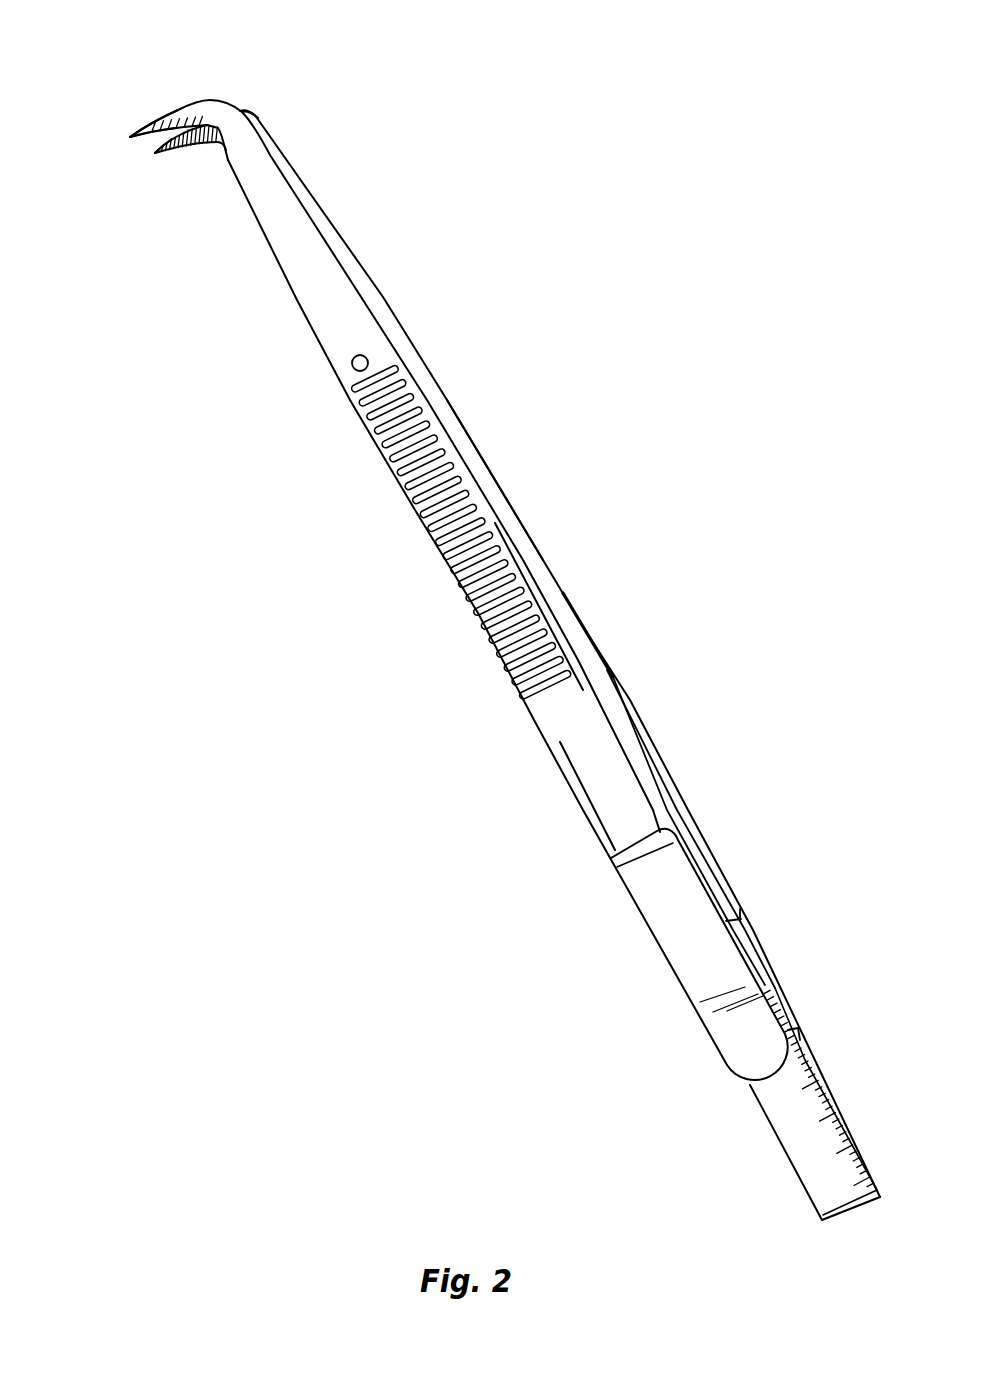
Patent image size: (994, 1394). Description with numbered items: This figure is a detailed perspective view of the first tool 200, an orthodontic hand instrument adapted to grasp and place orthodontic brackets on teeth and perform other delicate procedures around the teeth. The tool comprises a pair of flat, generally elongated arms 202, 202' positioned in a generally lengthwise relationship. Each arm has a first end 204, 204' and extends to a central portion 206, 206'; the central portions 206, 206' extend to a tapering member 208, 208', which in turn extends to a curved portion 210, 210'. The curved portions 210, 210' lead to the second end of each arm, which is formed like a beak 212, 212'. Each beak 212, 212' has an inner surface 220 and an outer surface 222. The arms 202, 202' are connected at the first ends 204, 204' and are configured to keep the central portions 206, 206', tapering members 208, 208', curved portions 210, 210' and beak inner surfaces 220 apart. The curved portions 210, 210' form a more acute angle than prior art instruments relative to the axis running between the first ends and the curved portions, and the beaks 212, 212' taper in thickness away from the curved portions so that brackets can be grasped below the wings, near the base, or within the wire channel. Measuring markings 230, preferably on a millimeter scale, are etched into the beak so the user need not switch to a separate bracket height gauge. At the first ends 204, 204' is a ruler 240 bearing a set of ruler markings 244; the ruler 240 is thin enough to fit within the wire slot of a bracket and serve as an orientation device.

The first tool 200 is at (326, 690).
The arm 202 is at (669, 784).
The arm 202' is at (658, 742).
The first end 204 is at (686, 954).
The first end 204' is at (805, 960).
The central portion 206 is at (452, 527).
The central portion 206' is at (528, 472).
The tapering member 208 is at (448, 588).
The tapering member 208' is at (561, 653).
The curved portion 210 is at (179, 69).
The curved portion 210' is at (236, 59).
The beak 212 is at (129, 112).
The beak 212' is at (183, 181).
The inner surface 220 is at (163, 152).
The outer surface 222 is at (160, 127).
The measuring markings 230 is at (150, 140).
The ruler 240 is at (805, 1175).
The ruler markings 244 is at (830, 1095).